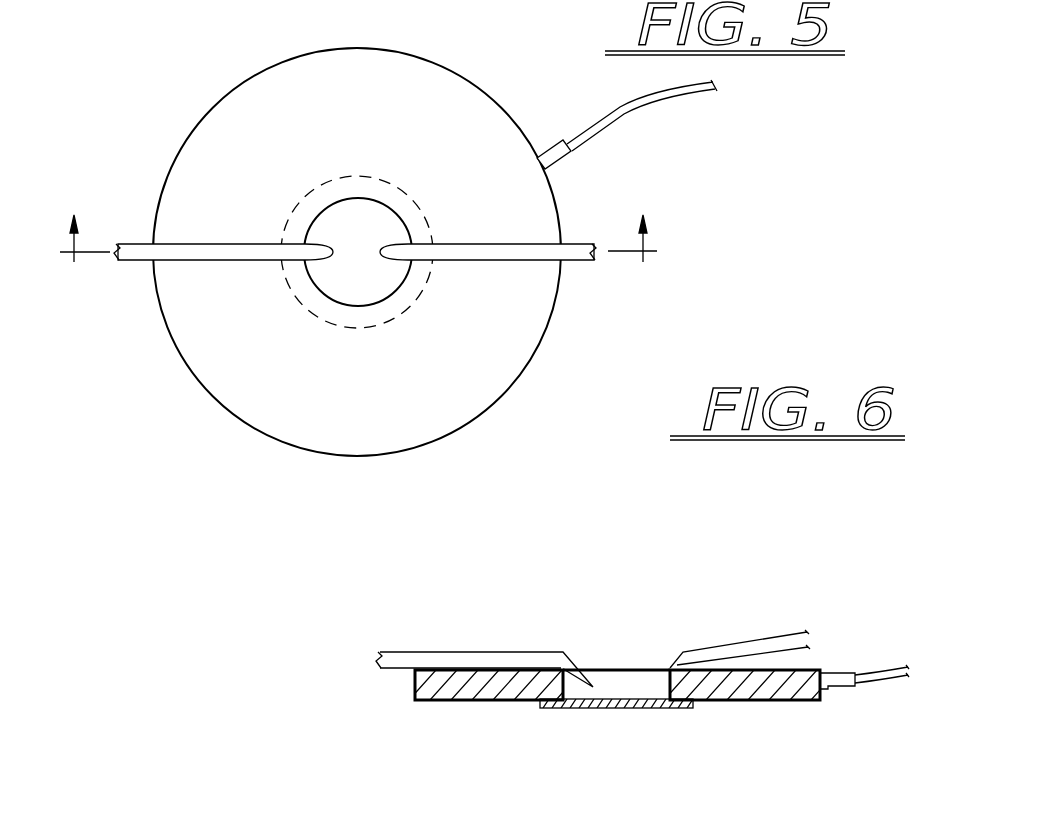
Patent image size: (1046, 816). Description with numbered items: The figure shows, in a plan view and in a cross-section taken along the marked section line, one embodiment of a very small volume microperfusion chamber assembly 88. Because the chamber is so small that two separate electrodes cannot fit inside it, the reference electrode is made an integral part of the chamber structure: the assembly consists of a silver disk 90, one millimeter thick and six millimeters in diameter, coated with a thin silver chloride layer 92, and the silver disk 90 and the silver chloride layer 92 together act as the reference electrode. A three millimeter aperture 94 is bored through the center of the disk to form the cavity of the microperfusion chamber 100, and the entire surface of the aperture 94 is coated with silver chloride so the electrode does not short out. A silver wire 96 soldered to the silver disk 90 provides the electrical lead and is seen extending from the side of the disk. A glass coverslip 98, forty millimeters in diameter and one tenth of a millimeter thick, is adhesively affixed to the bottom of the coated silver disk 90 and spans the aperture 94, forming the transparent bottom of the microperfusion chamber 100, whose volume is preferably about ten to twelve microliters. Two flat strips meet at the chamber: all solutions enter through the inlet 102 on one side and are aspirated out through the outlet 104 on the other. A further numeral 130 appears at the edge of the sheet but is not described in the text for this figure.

In FIG. 5, the microperfusion chamber assembly 88 is at (478, 65).
In FIG. 6, the microperfusion chamber assembly 88 is at (830, 610).
In FIG. 5, the silver disk 90 is at (357, 282).
In FIG. 6, the silver disk 90 is at (550, 731).
In FIG. 5, the silver chloride layer 92 is at (250, 97).
In FIG. 6, the silver chloride layer 92 is at (430, 700).
In FIG. 5, the aperture 94 is at (385, 210).
In FIG. 6, the aperture 94 is at (660, 688).
In FIG. 5, the silver wire 96 is at (603, 128).
In FIG. 6, the silver wire 96 is at (840, 688).
In FIG. 5, the glass coverslip 98 is at (417, 290).
In FIG. 6, the glass coverslip 98 is at (547, 707).
In FIG. 5, the microperfusion chamber 100 is at (324, 223).
In FIG. 6, the microperfusion chamber 100 is at (610, 683).
In FIG. 5, the inlet 102 is at (141, 244).
In FIG. 6, the inlet 102 is at (438, 655).
In FIG. 5, the outlet 104 is at (573, 243).
In FIG. 6, the outlet 104 is at (706, 652).
In FIG. 6, the component 130 is at (240, 815).